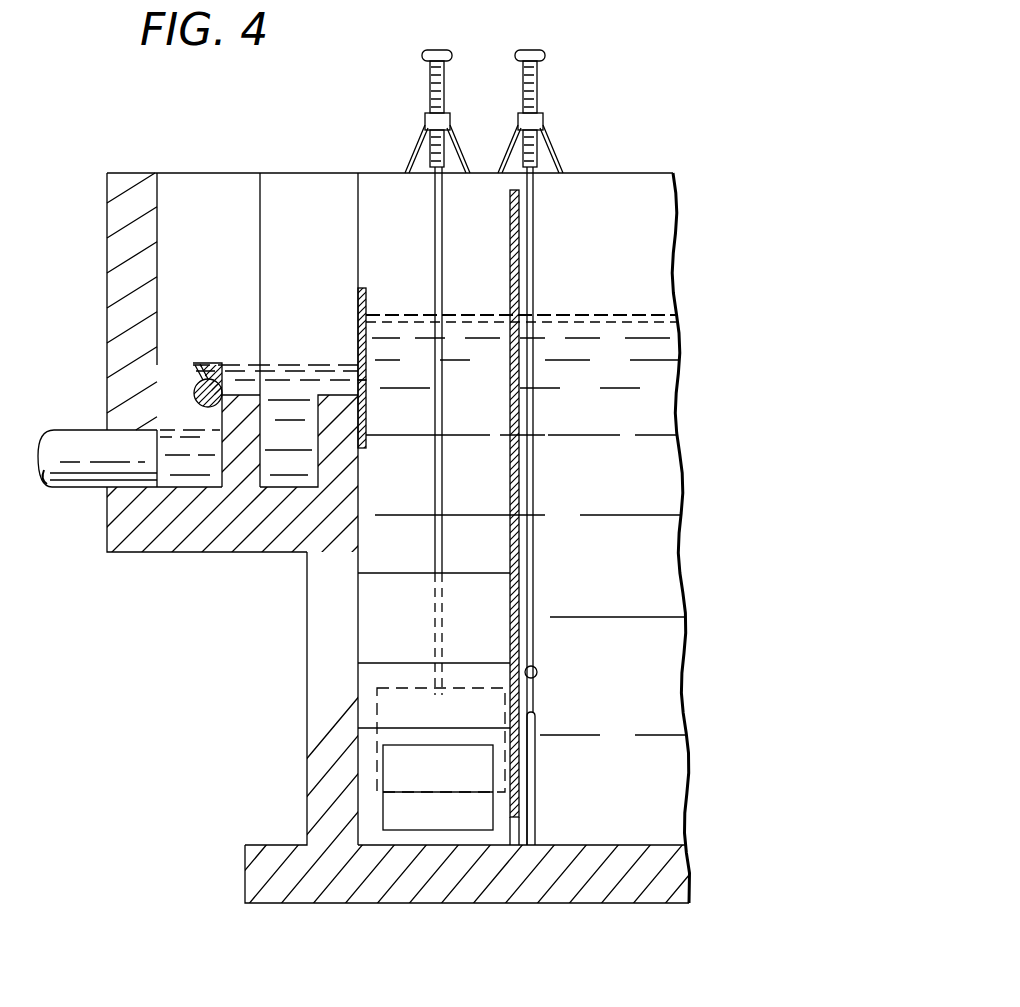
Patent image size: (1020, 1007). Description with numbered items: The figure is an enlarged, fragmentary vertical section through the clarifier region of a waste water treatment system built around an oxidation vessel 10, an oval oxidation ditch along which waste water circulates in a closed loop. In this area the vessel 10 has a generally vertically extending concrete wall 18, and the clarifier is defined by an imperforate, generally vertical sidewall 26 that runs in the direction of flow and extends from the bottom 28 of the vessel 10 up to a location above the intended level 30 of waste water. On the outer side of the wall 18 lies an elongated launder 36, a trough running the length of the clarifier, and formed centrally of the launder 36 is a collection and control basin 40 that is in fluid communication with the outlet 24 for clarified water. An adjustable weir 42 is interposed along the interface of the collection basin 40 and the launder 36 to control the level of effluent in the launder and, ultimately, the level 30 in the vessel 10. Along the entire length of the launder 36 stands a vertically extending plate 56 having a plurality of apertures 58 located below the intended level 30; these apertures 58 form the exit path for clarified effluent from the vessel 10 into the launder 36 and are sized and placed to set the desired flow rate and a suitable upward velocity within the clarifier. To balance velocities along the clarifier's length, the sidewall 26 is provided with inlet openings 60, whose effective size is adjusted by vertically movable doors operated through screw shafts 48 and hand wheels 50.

The oxidation vessel 10 is at (648, 150).
The concrete wall 18 is at (318, 652).
The outlet 24 is at (79, 428).
The sidewall 26 is at (510, 276).
The bottom 28 is at (656, 808).
The intended level 30 is at (628, 313).
The launder 36 is at (306, 203).
The collection and control basin 40 is at (230, 273).
The adjustable weir 42 is at (213, 330).
The screw shafts 48 is at (524, 82).
The hand wheels 50 is at (530, 48).
The plate 56 is at (368, 300).
The apertures 58 is at (366, 385).
The inlet openings 60 is at (523, 815).